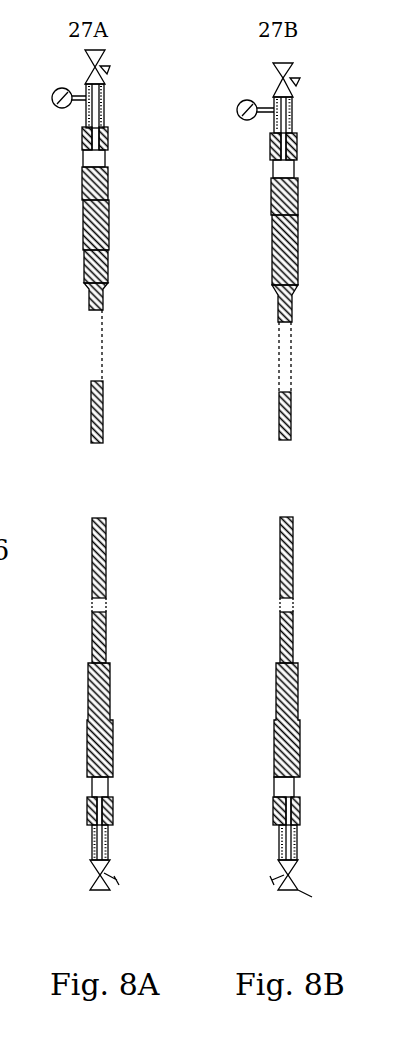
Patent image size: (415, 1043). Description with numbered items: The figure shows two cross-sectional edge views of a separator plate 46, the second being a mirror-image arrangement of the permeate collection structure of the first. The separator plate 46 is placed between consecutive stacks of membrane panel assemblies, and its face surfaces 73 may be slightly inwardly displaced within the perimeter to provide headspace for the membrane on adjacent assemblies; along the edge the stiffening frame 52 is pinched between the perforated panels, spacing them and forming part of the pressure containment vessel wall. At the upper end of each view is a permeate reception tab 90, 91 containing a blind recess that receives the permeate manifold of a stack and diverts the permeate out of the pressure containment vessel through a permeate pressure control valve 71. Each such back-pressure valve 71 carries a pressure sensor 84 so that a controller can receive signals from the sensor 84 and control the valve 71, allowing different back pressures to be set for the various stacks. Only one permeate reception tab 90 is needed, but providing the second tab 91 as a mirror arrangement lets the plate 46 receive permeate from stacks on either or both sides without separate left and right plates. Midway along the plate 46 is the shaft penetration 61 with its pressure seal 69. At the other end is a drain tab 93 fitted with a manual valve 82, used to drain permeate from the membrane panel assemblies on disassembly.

In FIG. 8A, the separator plate 46 is at (113, 557).
In FIG. 8B, the stiffening frame 52 is at (296, 250).
In FIG. 8A, the shaft penetration 61 is at (97, 347).
In FIG. 8B, the shaft penetration 61 is at (284, 368).
In FIG. 8A, the pressure seal 69 is at (280, 606).
In FIG. 8B, the pressure seal 69 is at (286, 605).
In FIG. 8A, the permeate pressure control valve 71 is at (100, 57).
In FIG. 8B, the permeate pressure control valve 71 is at (292, 75).
In FIG. 8B, the face surface 73 is at (293, 542).
In FIG. 8A, the manual valve 82 is at (92, 887).
In FIG. 8B, the manual valve 82 is at (278, 862).
In FIG. 8A, the pressure sensor 84 is at (52, 93).
In FIG. 8A, the permeate reception tab 90 is at (105, 152).
In FIG. 8B, the permeate reception tab 91 is at (272, 183).
In FIG. 8A, the drain tab 93 is at (88, 778).
In FIG. 8B, the drain tab 93 is at (299, 770).